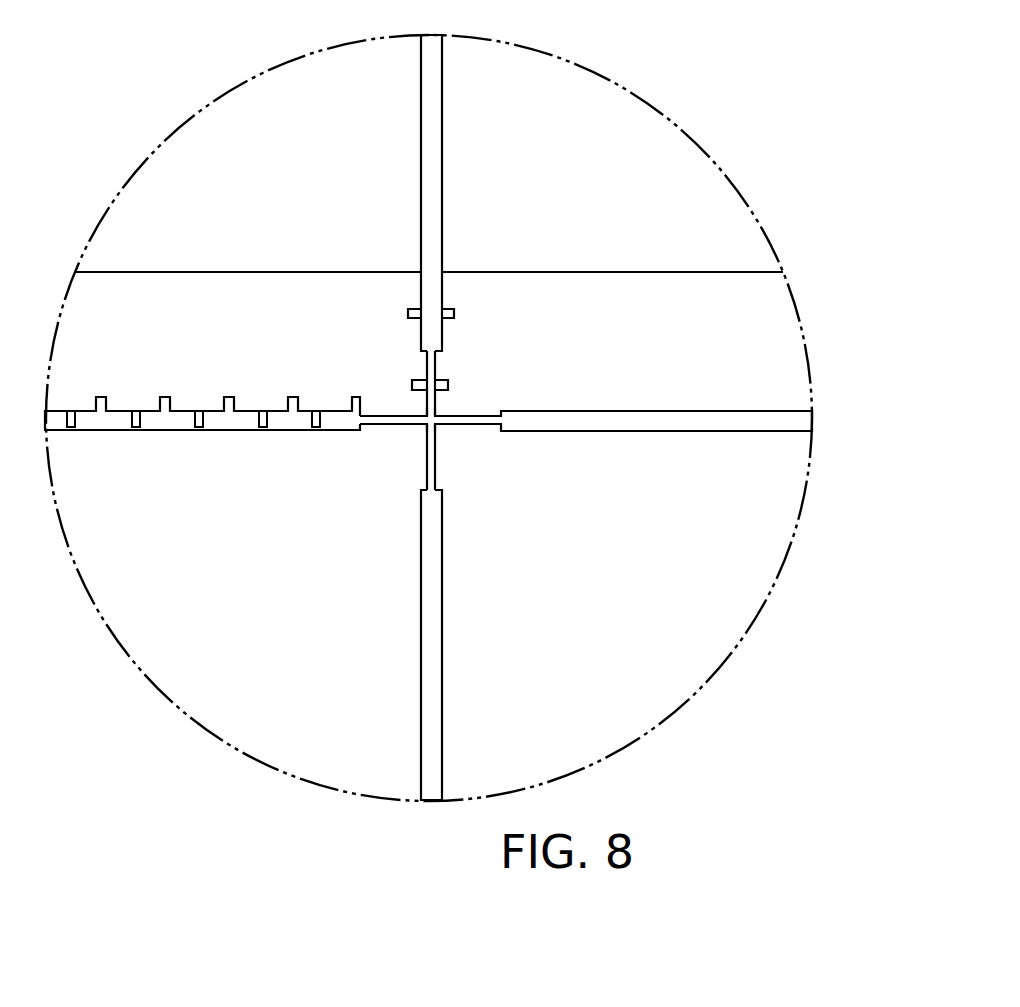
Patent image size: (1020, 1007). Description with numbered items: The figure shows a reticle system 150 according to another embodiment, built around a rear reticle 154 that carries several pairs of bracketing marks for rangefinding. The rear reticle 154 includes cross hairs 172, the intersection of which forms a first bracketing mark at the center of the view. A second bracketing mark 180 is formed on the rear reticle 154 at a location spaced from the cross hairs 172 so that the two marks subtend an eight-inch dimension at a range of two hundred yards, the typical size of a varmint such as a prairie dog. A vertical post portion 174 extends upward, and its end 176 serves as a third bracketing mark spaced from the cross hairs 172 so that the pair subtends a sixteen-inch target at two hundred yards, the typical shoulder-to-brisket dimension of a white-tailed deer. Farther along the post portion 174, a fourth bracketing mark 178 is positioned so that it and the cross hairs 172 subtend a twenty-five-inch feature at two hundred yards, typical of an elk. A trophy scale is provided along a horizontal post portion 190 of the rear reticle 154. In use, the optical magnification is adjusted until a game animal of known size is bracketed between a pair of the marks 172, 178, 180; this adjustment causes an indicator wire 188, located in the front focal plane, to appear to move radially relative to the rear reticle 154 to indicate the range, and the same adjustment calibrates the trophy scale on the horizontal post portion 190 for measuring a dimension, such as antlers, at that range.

The reticle system 150 is at (764, 180).
The rear reticle 154 is at (768, 384).
The cross hairs 172 is at (451, 446).
The post portion 174 is at (442, 141).
The end of post portion 176 is at (425, 351).
The fourth bracketing mark 178 is at (477, 310).
The second bracketing mark 180 is at (477, 377).
The indicator wire 188 is at (625, 272).
The horizontal post portion 190 is at (215, 432).